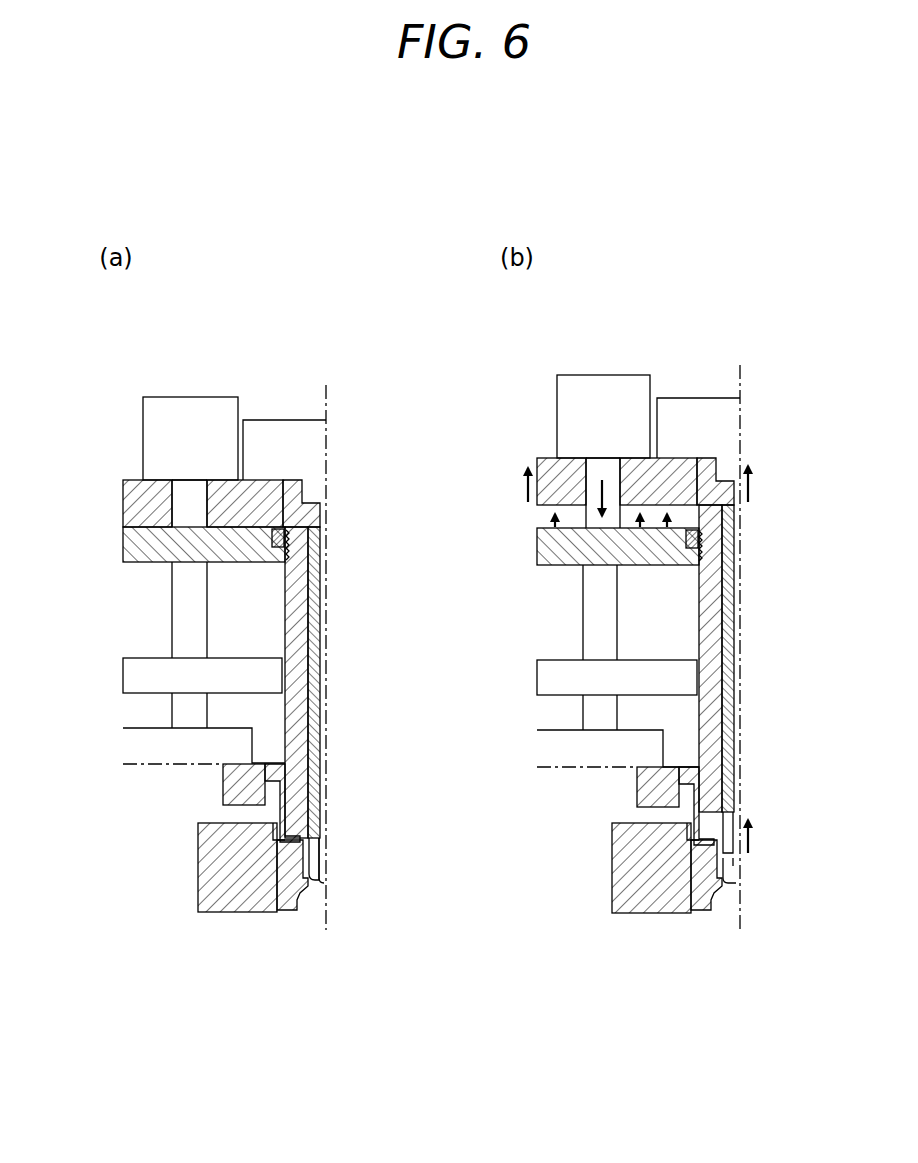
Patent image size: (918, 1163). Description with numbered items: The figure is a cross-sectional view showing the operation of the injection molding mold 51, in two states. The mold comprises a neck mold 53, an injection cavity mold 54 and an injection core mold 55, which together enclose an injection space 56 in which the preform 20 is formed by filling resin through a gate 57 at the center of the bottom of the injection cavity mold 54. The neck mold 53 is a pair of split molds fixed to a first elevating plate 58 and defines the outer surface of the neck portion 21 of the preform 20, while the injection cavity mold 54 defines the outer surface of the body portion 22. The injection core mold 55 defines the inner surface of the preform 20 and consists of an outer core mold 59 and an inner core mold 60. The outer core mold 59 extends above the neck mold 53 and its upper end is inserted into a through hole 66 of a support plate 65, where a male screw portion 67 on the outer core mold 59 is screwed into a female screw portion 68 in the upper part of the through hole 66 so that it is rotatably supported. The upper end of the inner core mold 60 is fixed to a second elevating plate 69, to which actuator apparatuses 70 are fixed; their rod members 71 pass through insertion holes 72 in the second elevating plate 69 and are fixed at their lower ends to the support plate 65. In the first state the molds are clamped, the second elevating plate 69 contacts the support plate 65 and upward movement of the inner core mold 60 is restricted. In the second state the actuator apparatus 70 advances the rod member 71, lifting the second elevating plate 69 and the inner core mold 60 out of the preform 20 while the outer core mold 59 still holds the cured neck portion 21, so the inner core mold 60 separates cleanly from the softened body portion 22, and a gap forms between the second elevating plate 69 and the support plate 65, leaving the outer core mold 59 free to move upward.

The preform 20 is at (577, 825).
The neck portion 21 is at (731, 815).
The body portion 22 is at (735, 866).
The injection molding mold 51 is at (186, 777).
The neck mold 53 is at (280, 803).
The injection cavity mold 54 is at (288, 902).
The injection core mold 55 is at (571, 671).
The injection space 56 is at (316, 860).
The gate 57 is at (318, 903).
The first elevating plate 58 is at (235, 773).
The outer core mold 59 is at (300, 606).
The inner core mold 60 is at (313, 578).
The support plate 65 is at (135, 541).
The through hole 66 is at (287, 567).
The male screw portion 67 is at (292, 500).
The female screw portion 68 is at (277, 528).
The second elevating plate 69 is at (132, 512).
The actuator apparatus 70 is at (158, 396).
The rod member 71 is at (182, 502).
The insertion hole 72 is at (193, 480).